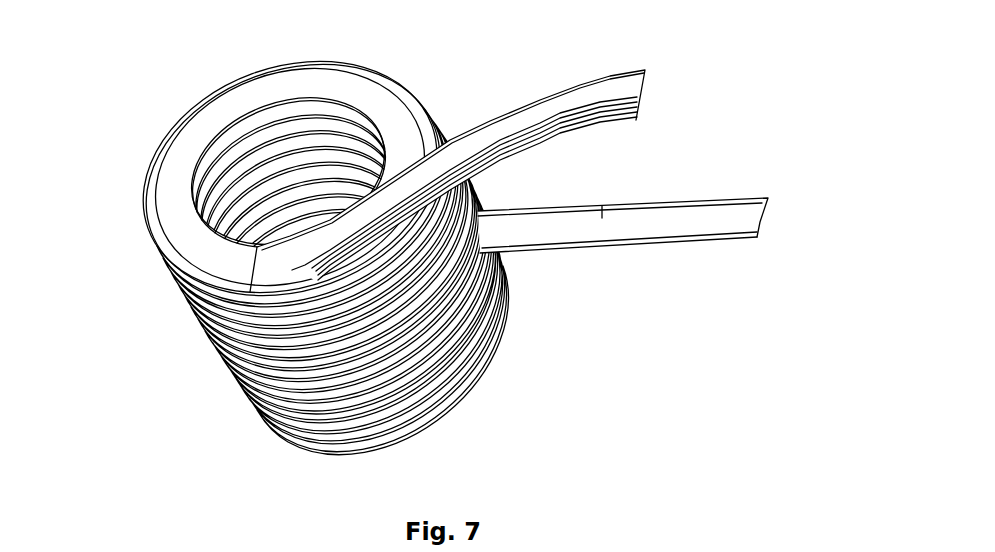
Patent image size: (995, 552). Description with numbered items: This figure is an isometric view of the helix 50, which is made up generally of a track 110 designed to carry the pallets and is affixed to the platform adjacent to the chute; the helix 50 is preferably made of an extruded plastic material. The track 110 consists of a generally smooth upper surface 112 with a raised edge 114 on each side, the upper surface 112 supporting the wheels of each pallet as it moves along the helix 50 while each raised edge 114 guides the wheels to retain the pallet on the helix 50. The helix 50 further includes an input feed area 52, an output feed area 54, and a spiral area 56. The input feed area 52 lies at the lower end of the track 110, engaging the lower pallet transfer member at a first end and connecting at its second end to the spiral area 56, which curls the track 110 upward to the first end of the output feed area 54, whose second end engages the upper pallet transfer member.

The helix 50 is at (461, 238).
The input feed area 52 is at (667, 219).
The output feed area 54 is at (647, 82).
The spiral area 56 is at (480, 373).
The track 110 is at (698, 200).
The upper surface 112 is at (637, 227).
The raised edge 114 is at (670, 217).